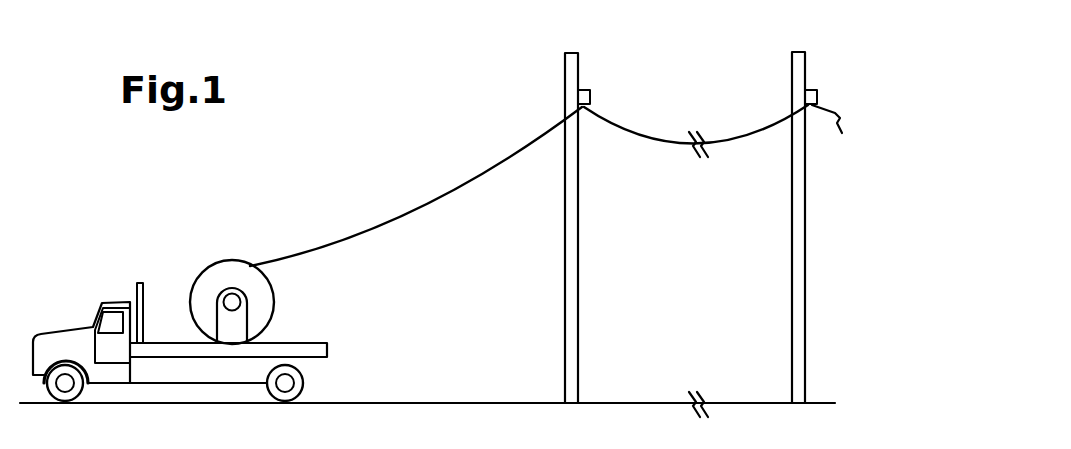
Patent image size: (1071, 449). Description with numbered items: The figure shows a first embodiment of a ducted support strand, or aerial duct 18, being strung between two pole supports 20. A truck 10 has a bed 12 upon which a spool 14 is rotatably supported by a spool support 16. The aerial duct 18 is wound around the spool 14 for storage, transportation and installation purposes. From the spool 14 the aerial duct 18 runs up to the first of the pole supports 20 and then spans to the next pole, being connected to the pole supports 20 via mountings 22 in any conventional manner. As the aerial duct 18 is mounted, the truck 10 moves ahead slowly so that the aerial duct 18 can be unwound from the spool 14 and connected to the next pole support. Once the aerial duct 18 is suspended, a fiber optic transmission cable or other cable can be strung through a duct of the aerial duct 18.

The truck 10 is at (102, 299).
The bed 12 is at (320, 351).
The spool 14 is at (225, 267).
The spool support 16 is at (233, 322).
The aerial duct 18 is at (488, 177).
The pole supports 20 is at (571, 55).
The mountings 22 is at (586, 90).